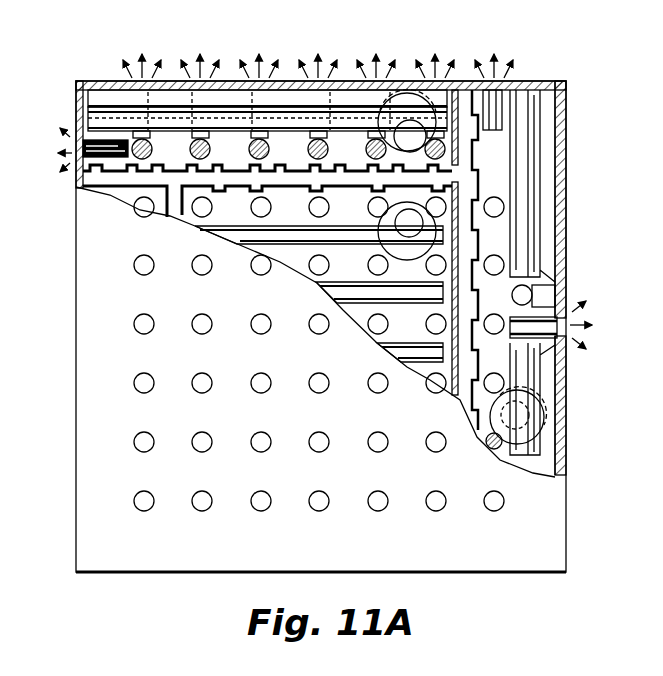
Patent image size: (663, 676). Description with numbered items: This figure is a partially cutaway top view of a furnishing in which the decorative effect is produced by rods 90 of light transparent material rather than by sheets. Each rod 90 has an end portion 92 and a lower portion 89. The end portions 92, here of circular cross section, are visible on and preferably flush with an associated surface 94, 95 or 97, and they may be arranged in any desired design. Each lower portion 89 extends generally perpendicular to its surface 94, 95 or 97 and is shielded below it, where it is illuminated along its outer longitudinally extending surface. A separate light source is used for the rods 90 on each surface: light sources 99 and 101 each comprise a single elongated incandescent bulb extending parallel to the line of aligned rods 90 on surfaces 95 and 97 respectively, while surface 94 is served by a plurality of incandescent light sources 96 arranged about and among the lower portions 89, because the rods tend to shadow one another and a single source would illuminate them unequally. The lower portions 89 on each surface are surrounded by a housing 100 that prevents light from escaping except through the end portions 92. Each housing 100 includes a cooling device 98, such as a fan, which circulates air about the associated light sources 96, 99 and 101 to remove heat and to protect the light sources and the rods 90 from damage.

The lower portion 89 is at (509, 315).
The rods 90 is at (192, 147).
The end portion 92 is at (270, 390).
The surface 94 is at (112, 370).
The surface 95 is at (178, 573).
The light source 96 is at (373, 289).
The surface 97 is at (566, 410).
The cooling device 98 is at (426, 102).
The light source 99 is at (109, 101).
The housing 100 is at (348, 141).
The light source 101 is at (548, 289).